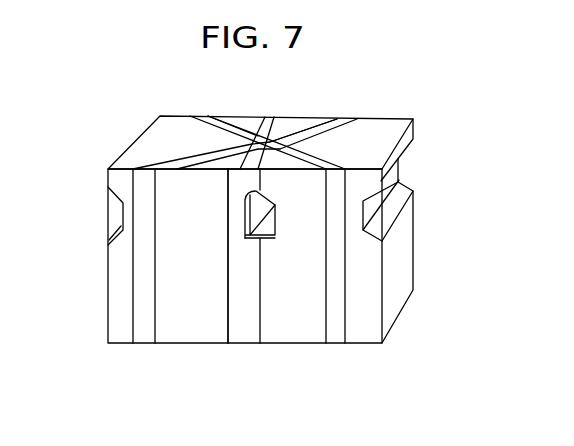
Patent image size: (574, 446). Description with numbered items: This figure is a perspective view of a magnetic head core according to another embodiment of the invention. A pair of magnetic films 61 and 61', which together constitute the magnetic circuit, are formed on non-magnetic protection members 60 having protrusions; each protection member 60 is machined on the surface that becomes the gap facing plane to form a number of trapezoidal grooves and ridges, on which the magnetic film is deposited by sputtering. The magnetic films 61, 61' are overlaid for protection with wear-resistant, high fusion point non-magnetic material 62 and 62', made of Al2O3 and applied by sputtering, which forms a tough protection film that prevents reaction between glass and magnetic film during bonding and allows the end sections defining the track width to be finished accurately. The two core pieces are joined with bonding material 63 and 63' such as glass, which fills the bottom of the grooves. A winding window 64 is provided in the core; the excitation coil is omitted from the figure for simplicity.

The non-magnetic protection member 60 is at (110, 188).
The magnetic film 61 is at (263, 126).
The magnetic film 61' is at (267, 123).
The non-magnetic material 62 is at (310, 116).
The non-magnetic material 62' is at (241, 112).
The bonding material 63 is at (275, 125).
The bonding material 63' is at (210, 256).
The winding window 64 is at (262, 240).